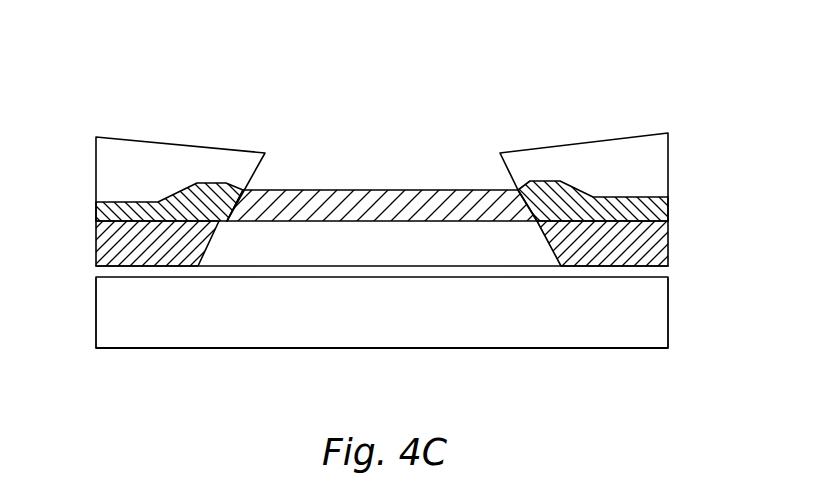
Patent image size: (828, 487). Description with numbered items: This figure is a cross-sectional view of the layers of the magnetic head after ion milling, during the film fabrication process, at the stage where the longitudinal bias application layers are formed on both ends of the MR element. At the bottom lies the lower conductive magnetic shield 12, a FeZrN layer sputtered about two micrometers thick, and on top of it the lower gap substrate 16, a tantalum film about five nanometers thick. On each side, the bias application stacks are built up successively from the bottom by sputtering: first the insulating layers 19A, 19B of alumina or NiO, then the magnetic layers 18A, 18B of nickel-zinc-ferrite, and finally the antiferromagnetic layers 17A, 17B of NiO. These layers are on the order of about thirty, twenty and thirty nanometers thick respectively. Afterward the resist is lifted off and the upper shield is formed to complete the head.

The lower conductive magnetic shield 12 is at (648, 327).
The lower gap substrate 16 is at (670, 267).
The antiferromagnetic layer 17A is at (637, 157).
The antiferromagnetic layer 17B is at (148, 158).
The magnetic layer 18A is at (670, 197).
The magnetic layer 18B is at (95, 215).
The insulating layer 19A is at (670, 240).
The insulating layer 19B is at (97, 247).